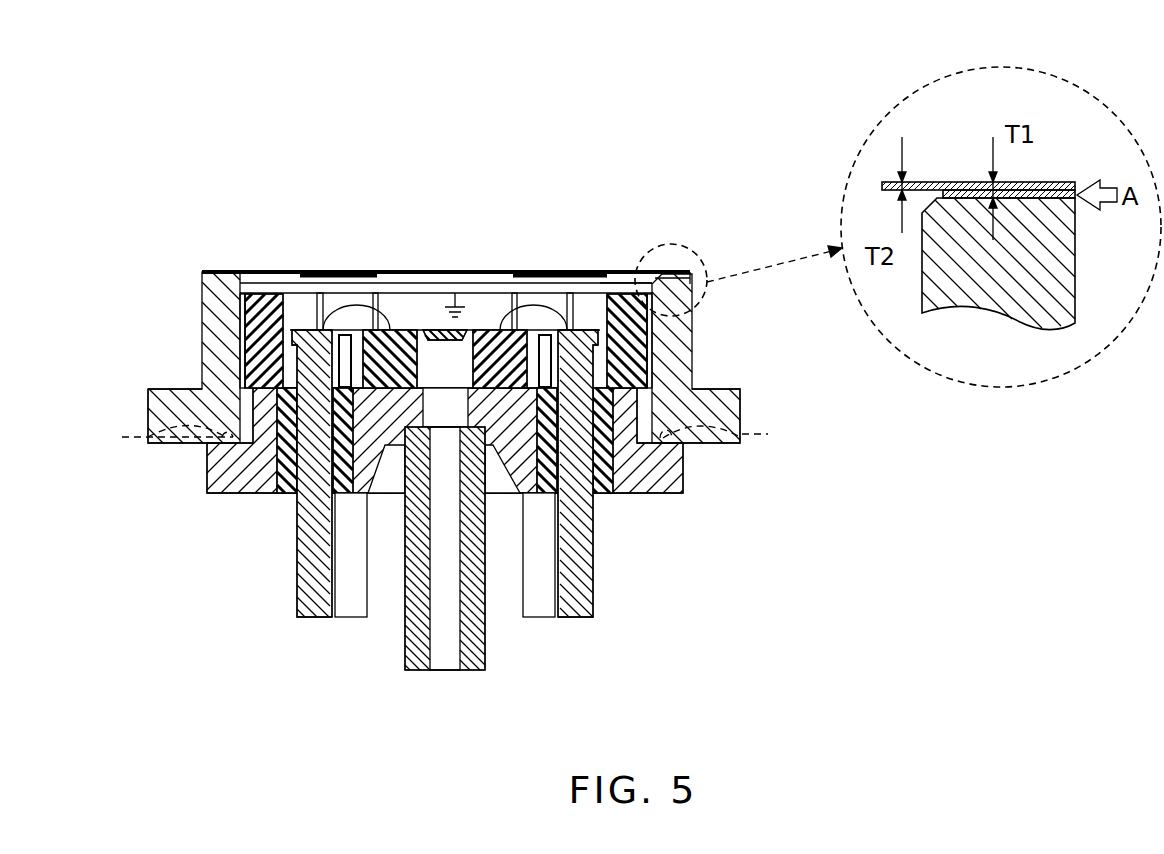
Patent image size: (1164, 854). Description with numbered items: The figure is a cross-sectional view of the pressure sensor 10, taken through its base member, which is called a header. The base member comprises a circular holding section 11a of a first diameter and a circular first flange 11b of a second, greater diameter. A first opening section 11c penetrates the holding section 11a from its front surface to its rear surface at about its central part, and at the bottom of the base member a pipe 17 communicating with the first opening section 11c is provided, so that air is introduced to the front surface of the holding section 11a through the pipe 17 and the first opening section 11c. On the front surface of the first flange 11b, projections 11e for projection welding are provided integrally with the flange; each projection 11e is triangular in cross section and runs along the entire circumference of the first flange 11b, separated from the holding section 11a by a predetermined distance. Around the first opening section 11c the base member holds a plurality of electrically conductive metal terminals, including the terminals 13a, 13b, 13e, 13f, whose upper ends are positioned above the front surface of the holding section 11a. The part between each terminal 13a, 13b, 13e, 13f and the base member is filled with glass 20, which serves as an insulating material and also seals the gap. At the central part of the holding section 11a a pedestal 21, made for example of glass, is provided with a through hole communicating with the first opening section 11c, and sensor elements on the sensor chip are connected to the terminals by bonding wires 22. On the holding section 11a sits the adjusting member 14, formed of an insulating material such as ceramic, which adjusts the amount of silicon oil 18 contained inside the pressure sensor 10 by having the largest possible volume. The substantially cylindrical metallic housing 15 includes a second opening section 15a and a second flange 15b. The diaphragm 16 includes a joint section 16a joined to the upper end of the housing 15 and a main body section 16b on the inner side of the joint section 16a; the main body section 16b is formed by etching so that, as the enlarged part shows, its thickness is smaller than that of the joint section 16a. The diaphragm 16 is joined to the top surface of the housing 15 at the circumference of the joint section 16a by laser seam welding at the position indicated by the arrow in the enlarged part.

The pressure sensor 10 is at (754, 187).
The holding section 11a is at (250, 367).
The first flange 11b is at (213, 484).
The first opening section 11c is at (460, 407).
The projection 11e is at (444, 432).
The terminal 13a is at (537, 608).
The terminal 13b is at (572, 604).
The terminal 13e is at (312, 610).
The terminal 13f is at (353, 608).
The adjusting member 14 is at (257, 312).
The housing 15 is at (692, 333).
The second opening section 15a is at (258, 280).
The second flange 15b is at (150, 402).
The diaphragm 16 is at (432, 266).
The joint section 16a is at (667, 281).
The main body section 16b is at (629, 270).
The pipe 17 is at (416, 660).
The silicon oil 18 is at (456, 293).
The glass 20 is at (289, 494).
The pedestal 21 is at (515, 366).
The bonding wire 22 is at (350, 300).